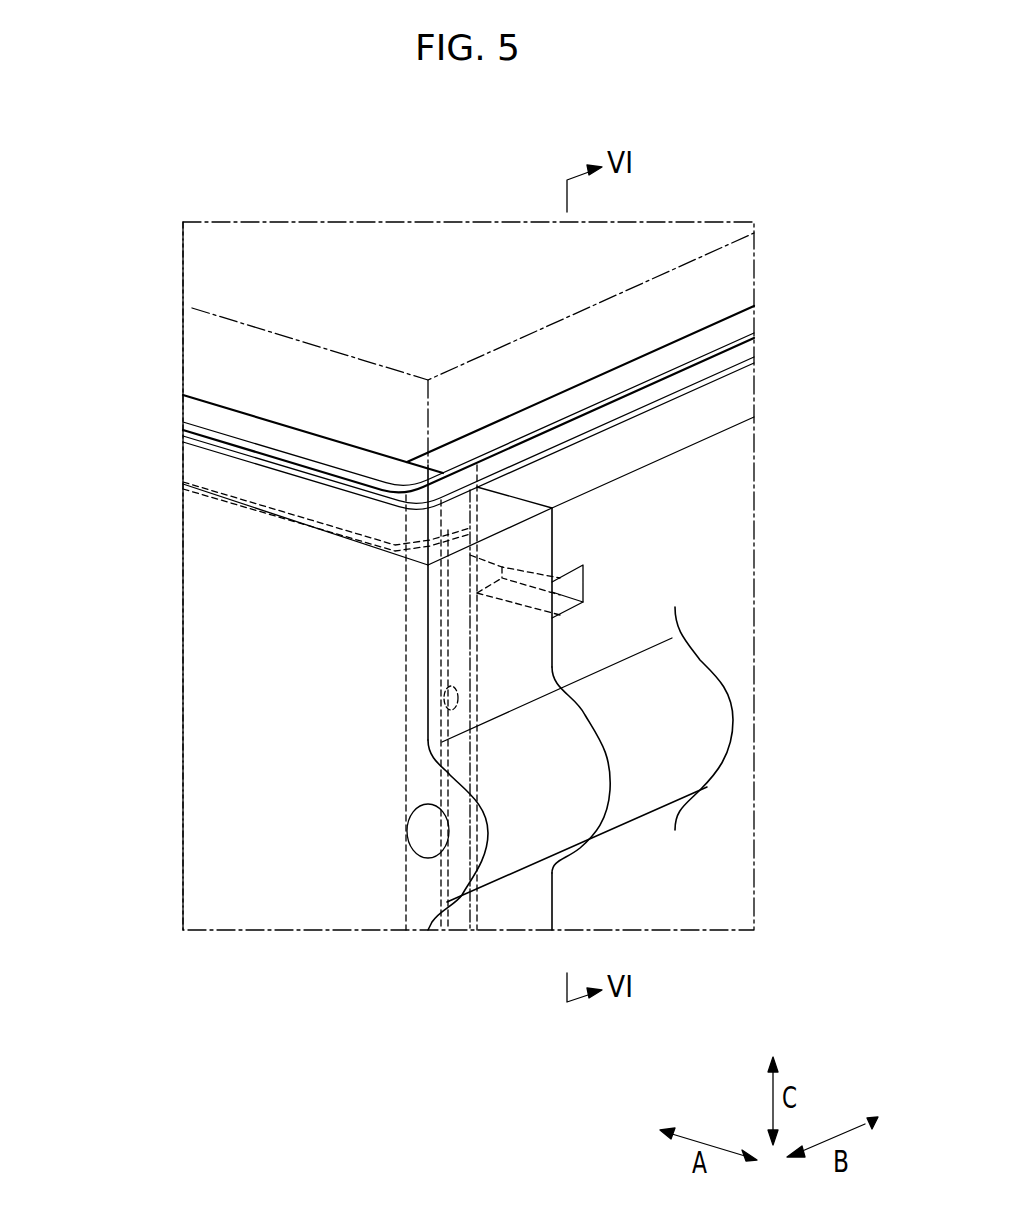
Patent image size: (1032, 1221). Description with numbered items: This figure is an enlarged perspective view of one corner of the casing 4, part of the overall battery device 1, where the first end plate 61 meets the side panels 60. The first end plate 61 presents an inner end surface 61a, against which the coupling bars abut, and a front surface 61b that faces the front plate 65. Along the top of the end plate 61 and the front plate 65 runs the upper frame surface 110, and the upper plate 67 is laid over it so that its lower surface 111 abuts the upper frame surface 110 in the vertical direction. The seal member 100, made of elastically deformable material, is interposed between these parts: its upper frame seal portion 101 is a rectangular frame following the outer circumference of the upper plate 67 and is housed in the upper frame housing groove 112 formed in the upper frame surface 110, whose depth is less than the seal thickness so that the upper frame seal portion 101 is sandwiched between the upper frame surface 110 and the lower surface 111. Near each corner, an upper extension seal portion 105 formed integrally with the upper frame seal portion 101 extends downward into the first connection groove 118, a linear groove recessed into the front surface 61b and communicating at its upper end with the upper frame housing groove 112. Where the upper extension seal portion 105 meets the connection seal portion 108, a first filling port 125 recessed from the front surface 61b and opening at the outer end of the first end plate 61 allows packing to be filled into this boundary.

The vehicle 1 is at (766, 207).
The casing 4 is at (163, 501).
The upper plate 67 is at (207, 307).
The seal member 100 is at (558, 400).
The upper frame seal portion 101 is at (665, 382).
The upper frame surface 110 is at (208, 408).
The upper frame housing groove 112 is at (240, 457).
The inner end surface 61a is at (503, 417).
The upper extension seal portion 105 is at (430, 575).
The connection seal portion 108 is at (458, 642).
The first connection groove 118 is at (444, 700).
The front plate 65 is at (203, 762).
The side panels 60 is at (226, 818).
The lower surface 111 is at (710, 435).
The first end plate 61 is at (724, 567).
The front surface 61b is at (532, 647).
The first filling port 125 is at (570, 578).